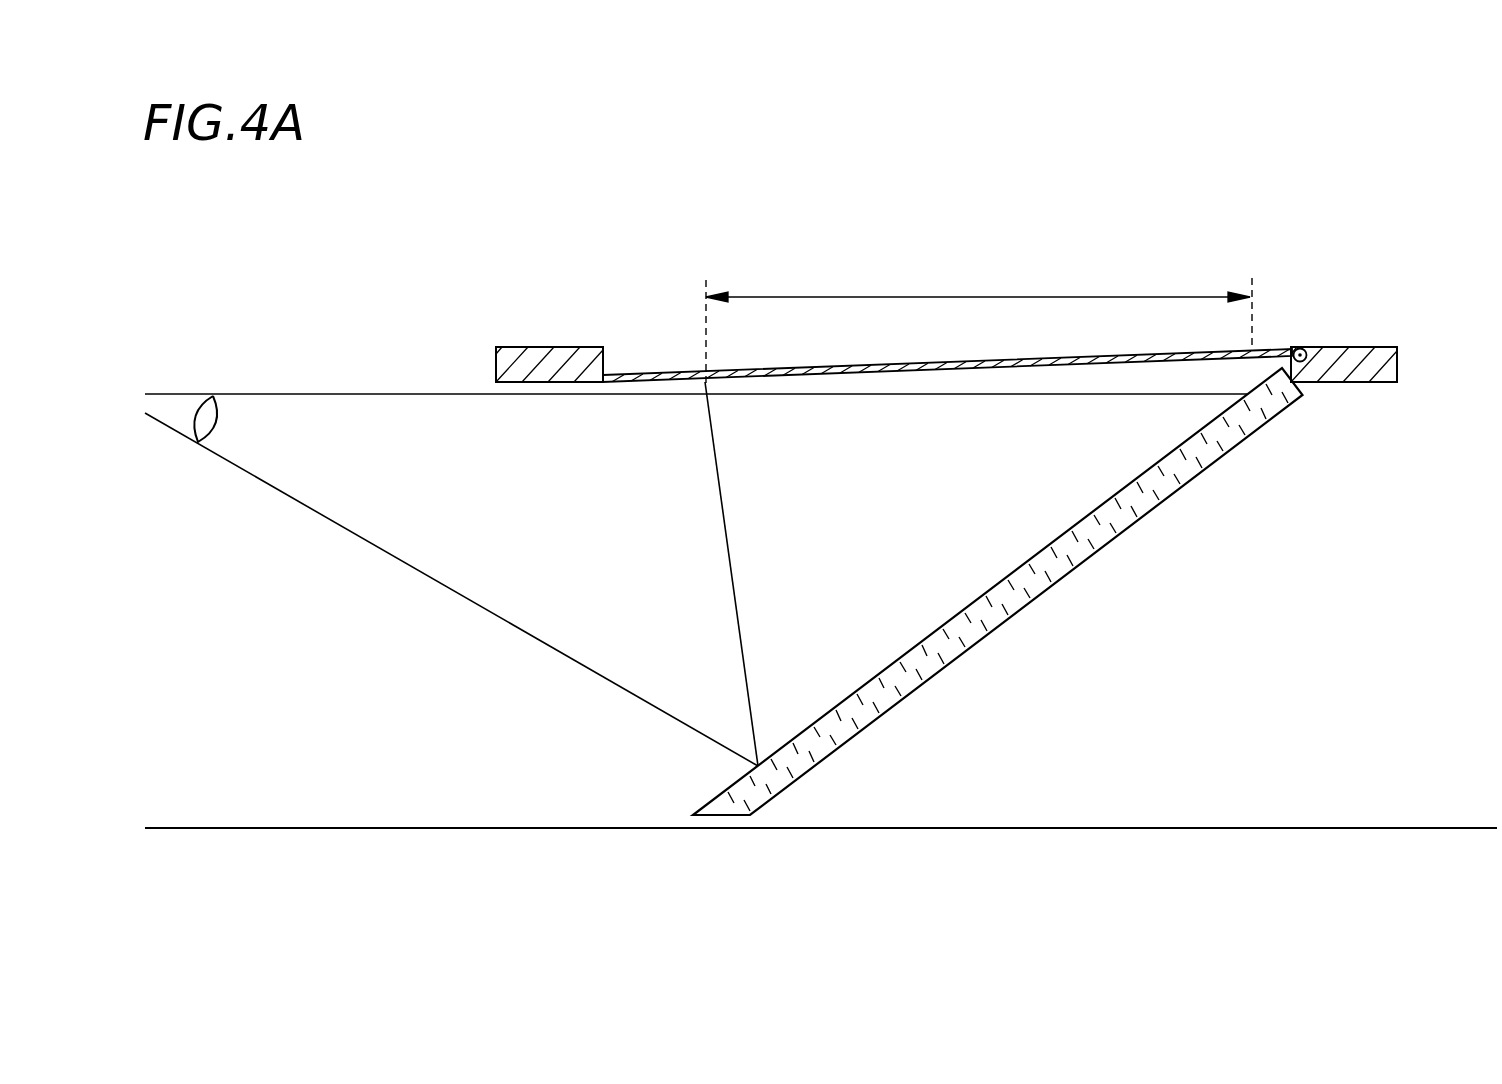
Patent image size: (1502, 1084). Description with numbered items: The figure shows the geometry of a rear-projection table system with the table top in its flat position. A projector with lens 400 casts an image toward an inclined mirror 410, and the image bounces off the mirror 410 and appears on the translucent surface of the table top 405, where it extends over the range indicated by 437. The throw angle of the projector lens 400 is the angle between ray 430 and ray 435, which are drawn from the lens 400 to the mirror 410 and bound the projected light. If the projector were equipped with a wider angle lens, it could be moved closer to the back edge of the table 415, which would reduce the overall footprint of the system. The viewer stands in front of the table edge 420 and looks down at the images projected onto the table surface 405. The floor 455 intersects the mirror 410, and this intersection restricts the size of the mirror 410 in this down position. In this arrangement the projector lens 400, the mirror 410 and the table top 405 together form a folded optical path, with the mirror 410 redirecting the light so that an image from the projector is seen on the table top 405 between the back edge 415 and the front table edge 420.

The projector lens 400 is at (187, 395).
The table top 405 is at (640, 374).
The inclined mirror 410 is at (1158, 498).
The back edge of the table 415 is at (535, 347).
The table edge 420 is at (1375, 347).
The ray 430 is at (290, 392).
The ray 435 is at (330, 522).
The image range 437 is at (920, 297).
The floor 455 is at (1206, 827).